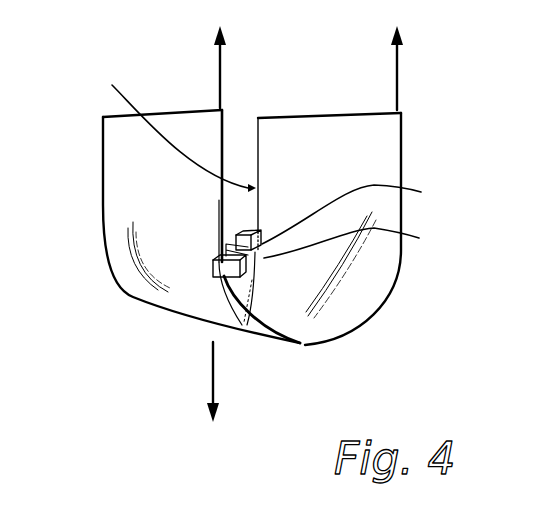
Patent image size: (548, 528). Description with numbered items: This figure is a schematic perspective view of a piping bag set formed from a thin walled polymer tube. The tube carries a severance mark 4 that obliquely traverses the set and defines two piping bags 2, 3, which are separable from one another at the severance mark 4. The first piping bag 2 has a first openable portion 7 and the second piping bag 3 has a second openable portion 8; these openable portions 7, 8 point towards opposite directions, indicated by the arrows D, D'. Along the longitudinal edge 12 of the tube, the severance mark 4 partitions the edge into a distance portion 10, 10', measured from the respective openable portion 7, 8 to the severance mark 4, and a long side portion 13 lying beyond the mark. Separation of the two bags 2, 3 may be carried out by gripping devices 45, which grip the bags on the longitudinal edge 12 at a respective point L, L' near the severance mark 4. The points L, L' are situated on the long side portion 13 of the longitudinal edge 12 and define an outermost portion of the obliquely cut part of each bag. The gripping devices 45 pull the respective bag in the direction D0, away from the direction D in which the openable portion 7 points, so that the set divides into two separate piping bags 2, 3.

The first piping bag 2 is at (376, 155).
The second piping bag 3 is at (132, 195).
The severance mark 4 is at (222, 305).
The first openable portion 7 is at (344, 101).
The second openable portion 8 is at (172, 107).
The distance portion 10 is at (278, 186).
The distance portion 10' is at (253, 149).
The longitudinal edge 12 is at (94, 250).
The long side portion 13 is at (248, 200).
The gripping device 45 is at (421, 192).
The gripping point L is at (355, 247).
The gripping point L' is at (170, 127).
The direction of first openable portion D is at (410, 59).
The direction of second openable portion D' is at (236, 60).
The pulling direction D0 is at (232, 395).